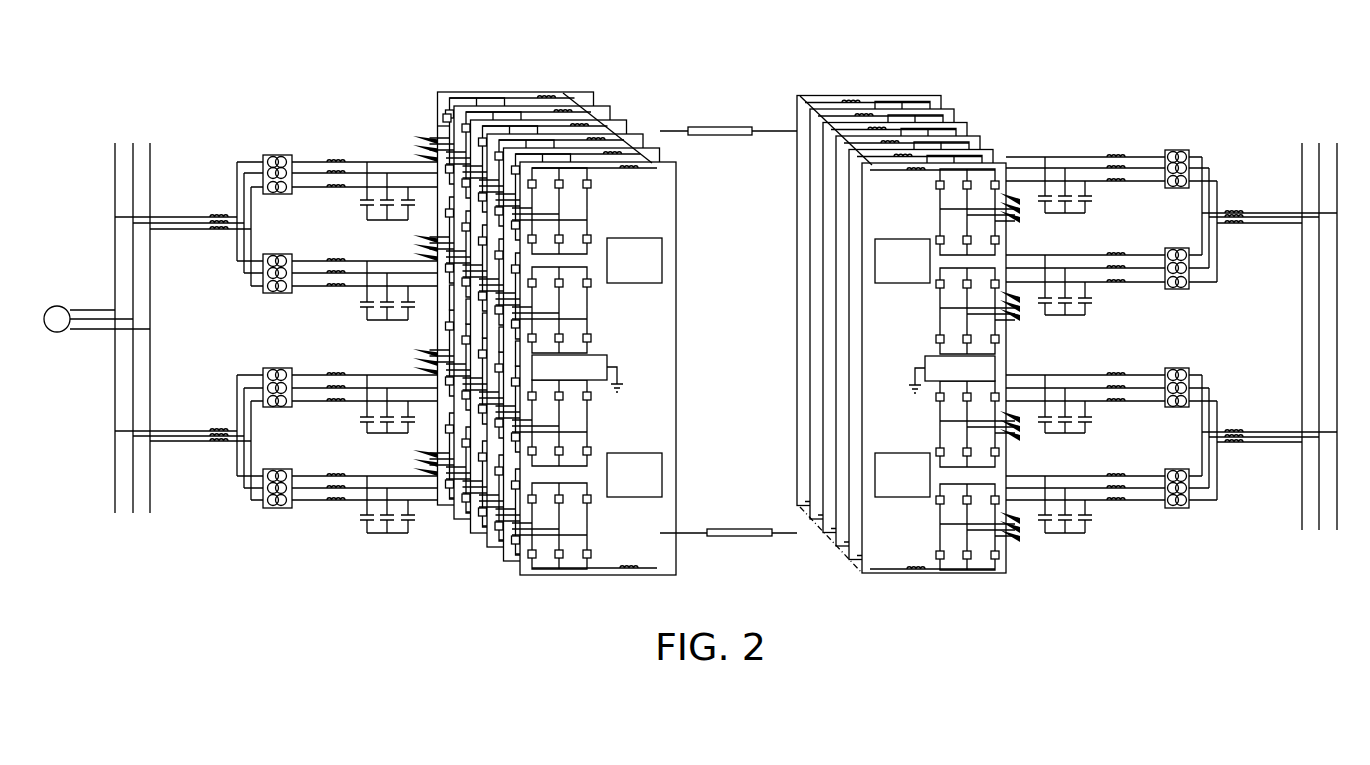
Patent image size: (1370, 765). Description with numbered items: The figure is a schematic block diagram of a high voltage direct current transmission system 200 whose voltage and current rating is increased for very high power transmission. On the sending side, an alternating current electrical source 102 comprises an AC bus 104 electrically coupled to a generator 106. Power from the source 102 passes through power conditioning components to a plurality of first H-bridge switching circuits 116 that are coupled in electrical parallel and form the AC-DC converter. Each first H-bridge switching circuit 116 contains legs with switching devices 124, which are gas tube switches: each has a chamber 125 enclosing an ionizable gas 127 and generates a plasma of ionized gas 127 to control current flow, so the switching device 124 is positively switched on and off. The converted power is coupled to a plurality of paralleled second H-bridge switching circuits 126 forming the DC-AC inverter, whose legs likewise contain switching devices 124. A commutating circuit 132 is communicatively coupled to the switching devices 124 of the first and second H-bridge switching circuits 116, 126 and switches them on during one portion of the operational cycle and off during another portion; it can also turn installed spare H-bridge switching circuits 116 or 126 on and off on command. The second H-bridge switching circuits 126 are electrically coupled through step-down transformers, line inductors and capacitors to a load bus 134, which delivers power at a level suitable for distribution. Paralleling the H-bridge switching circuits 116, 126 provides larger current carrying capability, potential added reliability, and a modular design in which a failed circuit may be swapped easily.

The alternating current electrical source 102 is at (140, 115).
The AC bus 104 is at (152, 160).
The generator 106 is at (57, 305).
The first H-bridge switching circuit 116 is at (595, 99).
The switching device 124 is at (592, 188).
The chamber 125 is at (445, 116).
The ionizable gas 127 is at (443, 127).
The second H-bridge switching circuit 126 is at (826, 340).
The commutating circuit 132 is at (922, 489).
The load bus 134 is at (1338, 142).
The HVDC transmission system 200 is at (818, 45).